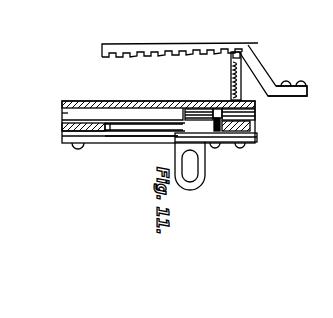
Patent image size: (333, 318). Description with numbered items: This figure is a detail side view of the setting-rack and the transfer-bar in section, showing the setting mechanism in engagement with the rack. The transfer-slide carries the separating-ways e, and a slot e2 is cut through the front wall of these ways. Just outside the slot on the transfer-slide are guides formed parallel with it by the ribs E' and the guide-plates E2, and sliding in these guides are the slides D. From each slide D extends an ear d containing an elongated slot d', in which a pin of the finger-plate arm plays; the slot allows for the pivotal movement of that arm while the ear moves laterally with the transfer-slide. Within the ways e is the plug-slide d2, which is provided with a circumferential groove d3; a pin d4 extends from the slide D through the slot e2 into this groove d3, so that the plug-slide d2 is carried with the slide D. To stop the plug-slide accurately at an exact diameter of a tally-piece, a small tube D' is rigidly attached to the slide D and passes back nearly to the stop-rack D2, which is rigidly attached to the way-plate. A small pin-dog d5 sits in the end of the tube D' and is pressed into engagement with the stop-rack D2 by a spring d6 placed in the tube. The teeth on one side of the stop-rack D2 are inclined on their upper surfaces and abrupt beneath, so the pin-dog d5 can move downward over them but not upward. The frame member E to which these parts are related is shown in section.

The carriage frame E is at (148, 125).
The ways e is at (56, 113).
The guide-plates E2 is at (97, 143).
The ribs E' is at (141, 150).
The slot e2 is at (150, 127).
The circumferential grooves d3 is at (231, 87).
The springs d6 is at (215, 110).
The tubes D' is at (264, 82).
The plug-slides d2 is at (257, 125).
The pin-dogs d5 is at (242, 62).
The stop-rack D2 is at (265, 57).
The slides D is at (216, 153).
The pins d4 is at (213, 143).
The ears d is at (200, 166).
The elongated slots d' is at (195, 177).